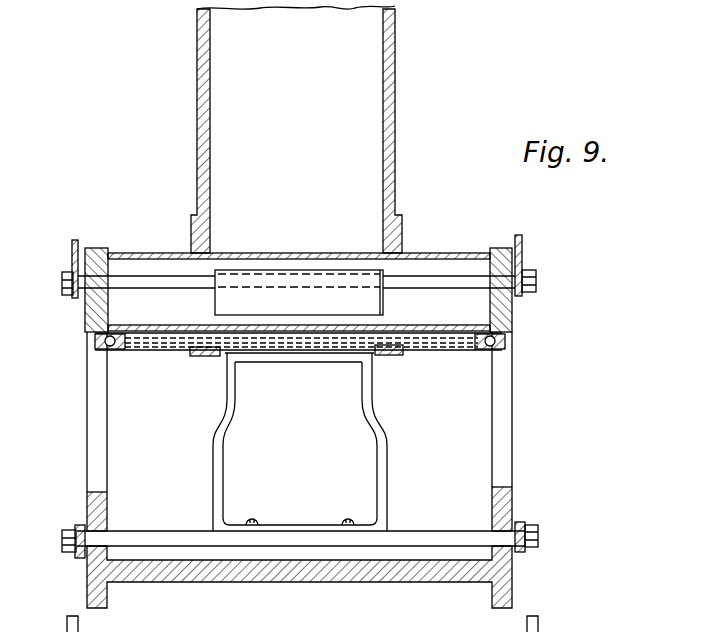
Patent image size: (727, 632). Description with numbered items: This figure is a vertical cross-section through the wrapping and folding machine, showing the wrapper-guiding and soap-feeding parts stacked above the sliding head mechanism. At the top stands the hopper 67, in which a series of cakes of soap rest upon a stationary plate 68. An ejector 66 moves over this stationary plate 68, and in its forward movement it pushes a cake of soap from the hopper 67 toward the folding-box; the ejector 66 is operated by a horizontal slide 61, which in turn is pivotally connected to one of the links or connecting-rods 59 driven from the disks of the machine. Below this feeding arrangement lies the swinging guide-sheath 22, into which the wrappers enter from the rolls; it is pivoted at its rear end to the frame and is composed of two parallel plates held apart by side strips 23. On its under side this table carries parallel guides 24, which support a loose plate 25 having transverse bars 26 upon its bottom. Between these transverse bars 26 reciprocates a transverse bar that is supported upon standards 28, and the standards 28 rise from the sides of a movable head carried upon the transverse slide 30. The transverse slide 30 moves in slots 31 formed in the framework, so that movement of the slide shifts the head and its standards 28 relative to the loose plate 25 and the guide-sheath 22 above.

The hopper 67 is at (296, 129).
The horizontal slide 61 is at (420, 276).
The ejector 66 is at (350, 277).
The stationary plate 68 is at (172, 316).
The connecting-rod 59 is at (72, 247).
The side strips 23 is at (85, 345).
The swinging guide-sheath 22 is at (176, 348).
The parallel guides 24 is at (208, 357).
The loose plate 25 is at (292, 354).
The transverse bars 26 is at (325, 363).
The standards 28 is at (214, 477).
The transverse slide 30 is at (415, 531).
The slots 31 is at (95, 527).